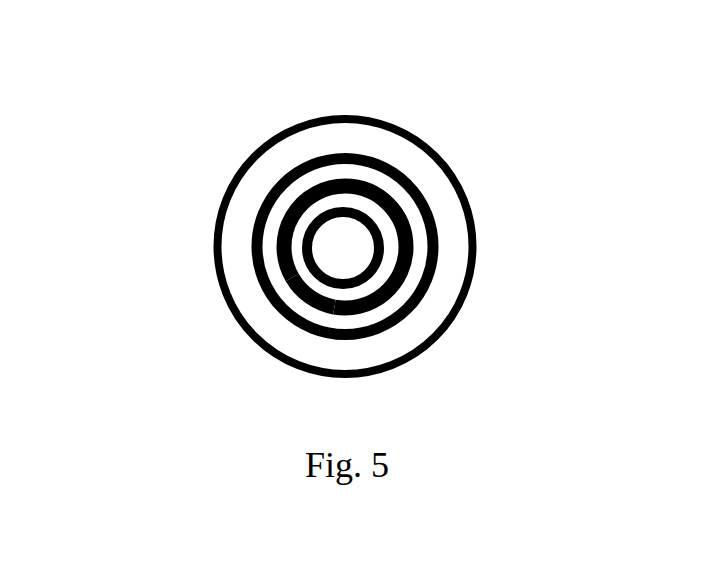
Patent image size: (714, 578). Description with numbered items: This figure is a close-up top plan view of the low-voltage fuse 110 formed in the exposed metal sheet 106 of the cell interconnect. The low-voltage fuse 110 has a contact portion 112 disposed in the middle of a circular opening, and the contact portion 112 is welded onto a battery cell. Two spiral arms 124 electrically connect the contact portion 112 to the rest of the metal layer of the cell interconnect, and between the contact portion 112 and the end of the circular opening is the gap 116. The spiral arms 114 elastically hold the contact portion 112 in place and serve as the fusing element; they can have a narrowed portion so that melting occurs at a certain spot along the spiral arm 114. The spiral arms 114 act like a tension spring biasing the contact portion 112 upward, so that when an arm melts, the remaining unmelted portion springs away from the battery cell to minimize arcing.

The low-voltage fuse 110 is at (204, 119).
The exposed metal sheet 106 is at (233, 229).
The contact portion 112 is at (338, 228).
The spiral arms 114 is at (307, 300).
The gap 116 is at (277, 268).
The spiral arms 124 is at (400, 220).